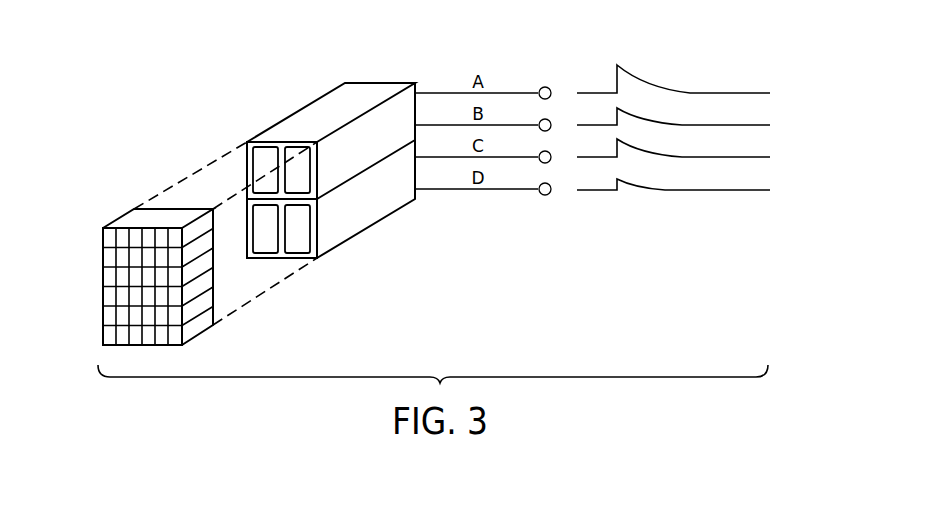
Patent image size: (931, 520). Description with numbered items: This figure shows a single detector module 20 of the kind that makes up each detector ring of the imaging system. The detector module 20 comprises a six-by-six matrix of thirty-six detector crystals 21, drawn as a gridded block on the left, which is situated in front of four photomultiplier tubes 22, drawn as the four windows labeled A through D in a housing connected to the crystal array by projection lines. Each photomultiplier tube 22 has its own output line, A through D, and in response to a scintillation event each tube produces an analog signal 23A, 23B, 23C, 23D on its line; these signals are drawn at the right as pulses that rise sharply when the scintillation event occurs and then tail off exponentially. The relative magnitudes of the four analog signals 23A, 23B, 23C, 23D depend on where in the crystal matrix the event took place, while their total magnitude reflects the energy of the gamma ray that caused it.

The detector module 20 is at (283, 80).
The detector crystals 21 is at (103, 252).
The photomultiplier tubes 22 is at (367, 158).
The analog signal 23A is at (718, 93).
The analog signal 23B is at (718, 125).
The analog signal 23C is at (718, 157).
The analog signal 23D is at (718, 190).